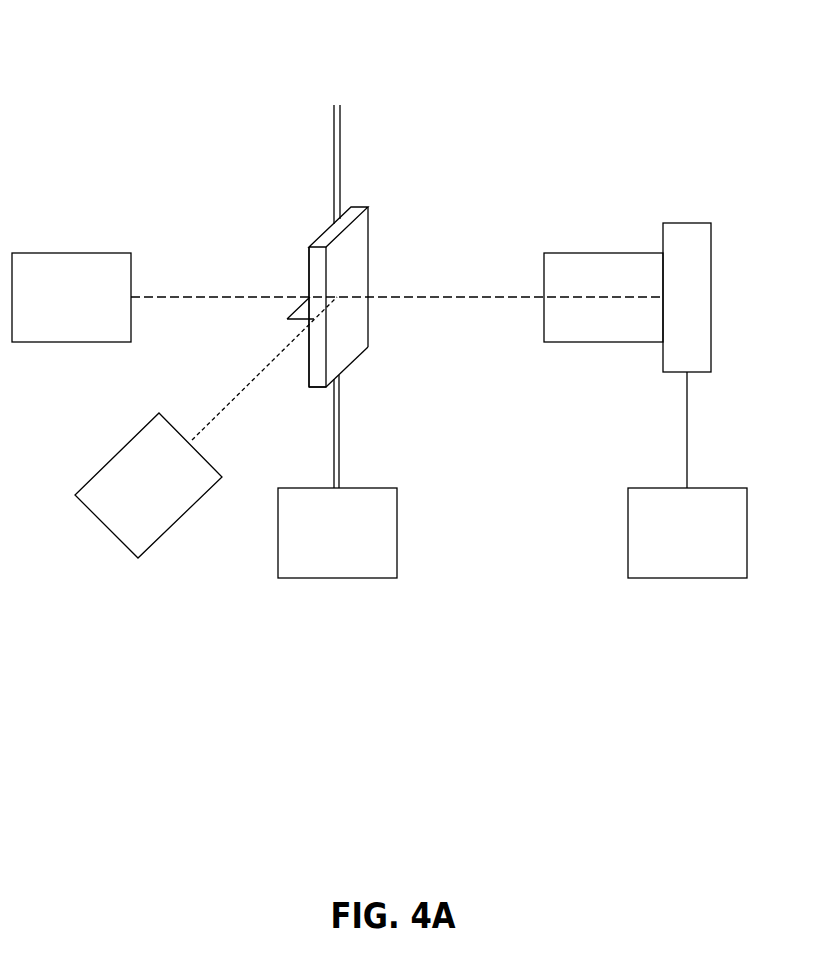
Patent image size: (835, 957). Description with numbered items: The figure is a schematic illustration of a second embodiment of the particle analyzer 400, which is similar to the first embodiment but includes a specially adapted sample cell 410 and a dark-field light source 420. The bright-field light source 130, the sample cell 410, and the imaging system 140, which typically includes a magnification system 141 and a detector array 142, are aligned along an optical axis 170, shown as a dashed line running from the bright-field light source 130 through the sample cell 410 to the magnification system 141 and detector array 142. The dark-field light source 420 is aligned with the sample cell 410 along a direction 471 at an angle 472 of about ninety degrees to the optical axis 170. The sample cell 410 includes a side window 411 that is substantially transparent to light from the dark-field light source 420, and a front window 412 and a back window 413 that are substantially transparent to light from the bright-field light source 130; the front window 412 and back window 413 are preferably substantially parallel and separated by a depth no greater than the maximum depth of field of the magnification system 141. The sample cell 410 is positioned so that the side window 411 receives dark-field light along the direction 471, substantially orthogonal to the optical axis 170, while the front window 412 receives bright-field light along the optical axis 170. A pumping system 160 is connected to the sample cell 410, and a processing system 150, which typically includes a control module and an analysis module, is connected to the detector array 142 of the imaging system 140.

The particle analyzer 400 is at (50, 78).
The bright-field light source 130 is at (71, 297).
The optical axis 170 is at (195, 297).
The sample cell 410 is at (338, 296).
The side window 411 is at (319, 364).
The front window 412 is at (306, 277).
The back window 413 is at (351, 344).
The direction 471 is at (235, 398).
The angle 472 is at (279, 318).
The dark-field light source 420 is at (148, 485).
The pumping system 160 is at (337, 533).
The imaging system 140 is at (627, 264).
The magnification system 141 is at (603, 297).
The detector array 142 is at (687, 297).
The processing system 150 is at (687, 475).